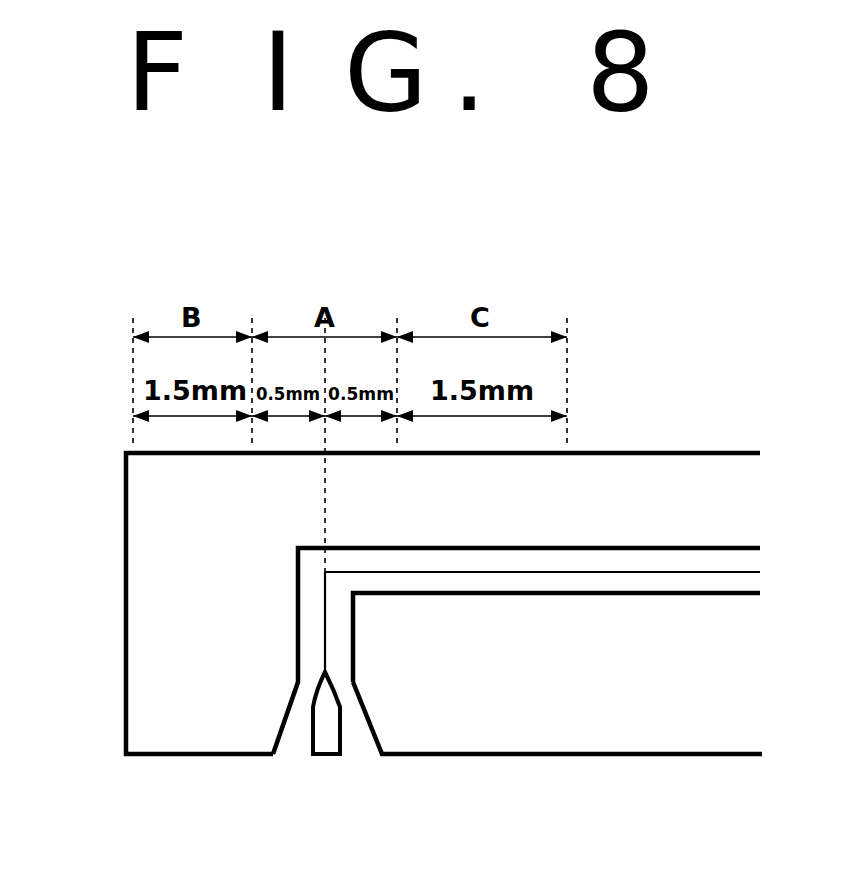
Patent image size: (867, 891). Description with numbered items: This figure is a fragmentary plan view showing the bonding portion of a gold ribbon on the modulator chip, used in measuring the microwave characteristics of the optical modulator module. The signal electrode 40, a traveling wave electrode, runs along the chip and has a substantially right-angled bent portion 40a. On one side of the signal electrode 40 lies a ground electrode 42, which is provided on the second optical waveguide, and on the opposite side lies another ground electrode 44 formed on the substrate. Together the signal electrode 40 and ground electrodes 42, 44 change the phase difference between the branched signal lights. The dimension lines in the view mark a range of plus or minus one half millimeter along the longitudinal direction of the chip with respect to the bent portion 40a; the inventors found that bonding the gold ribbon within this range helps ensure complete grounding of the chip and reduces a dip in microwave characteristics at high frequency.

The signal electrode 40 is at (577, 570).
The bent portion 40a is at (330, 570).
The ground electrode 42 is at (588, 733).
The ground electrode 44 is at (152, 638).